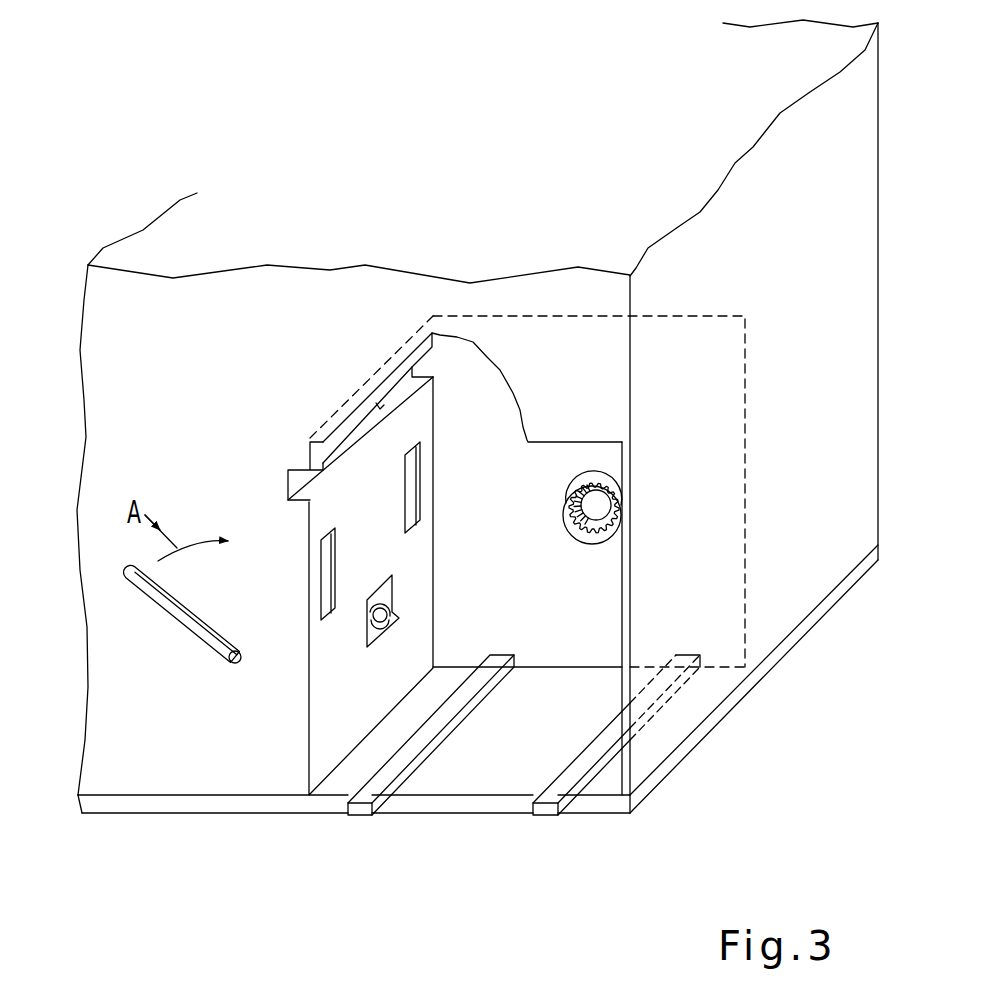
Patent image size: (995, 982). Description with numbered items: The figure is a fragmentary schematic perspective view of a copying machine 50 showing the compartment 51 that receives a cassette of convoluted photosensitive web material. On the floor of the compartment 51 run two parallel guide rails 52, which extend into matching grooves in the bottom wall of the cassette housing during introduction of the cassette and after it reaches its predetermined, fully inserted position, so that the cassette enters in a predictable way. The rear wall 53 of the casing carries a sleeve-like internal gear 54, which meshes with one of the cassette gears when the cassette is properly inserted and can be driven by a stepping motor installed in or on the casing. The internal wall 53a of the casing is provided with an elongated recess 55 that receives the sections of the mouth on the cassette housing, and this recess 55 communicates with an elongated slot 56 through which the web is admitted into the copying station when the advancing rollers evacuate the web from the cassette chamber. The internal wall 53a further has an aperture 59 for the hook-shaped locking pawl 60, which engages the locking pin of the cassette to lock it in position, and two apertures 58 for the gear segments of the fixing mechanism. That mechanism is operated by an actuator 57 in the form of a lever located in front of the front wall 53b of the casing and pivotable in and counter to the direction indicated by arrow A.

The copying machine 50 is at (150, 356).
The compartment 51 is at (511, 761).
The guide rails 52 is at (358, 812).
The rear wall 53 is at (271, 564).
The internal wall 53a is at (323, 715).
The front wall 53b is at (112, 430).
The internal gear 54 is at (570, 531).
The elongated recess 55 is at (305, 497).
The elongated slot 56 is at (348, 438).
The actuator 57 is at (150, 593).
The apertures 58 is at (416, 484).
The aperture 59 is at (392, 597).
The locking pawl 60 is at (393, 631).